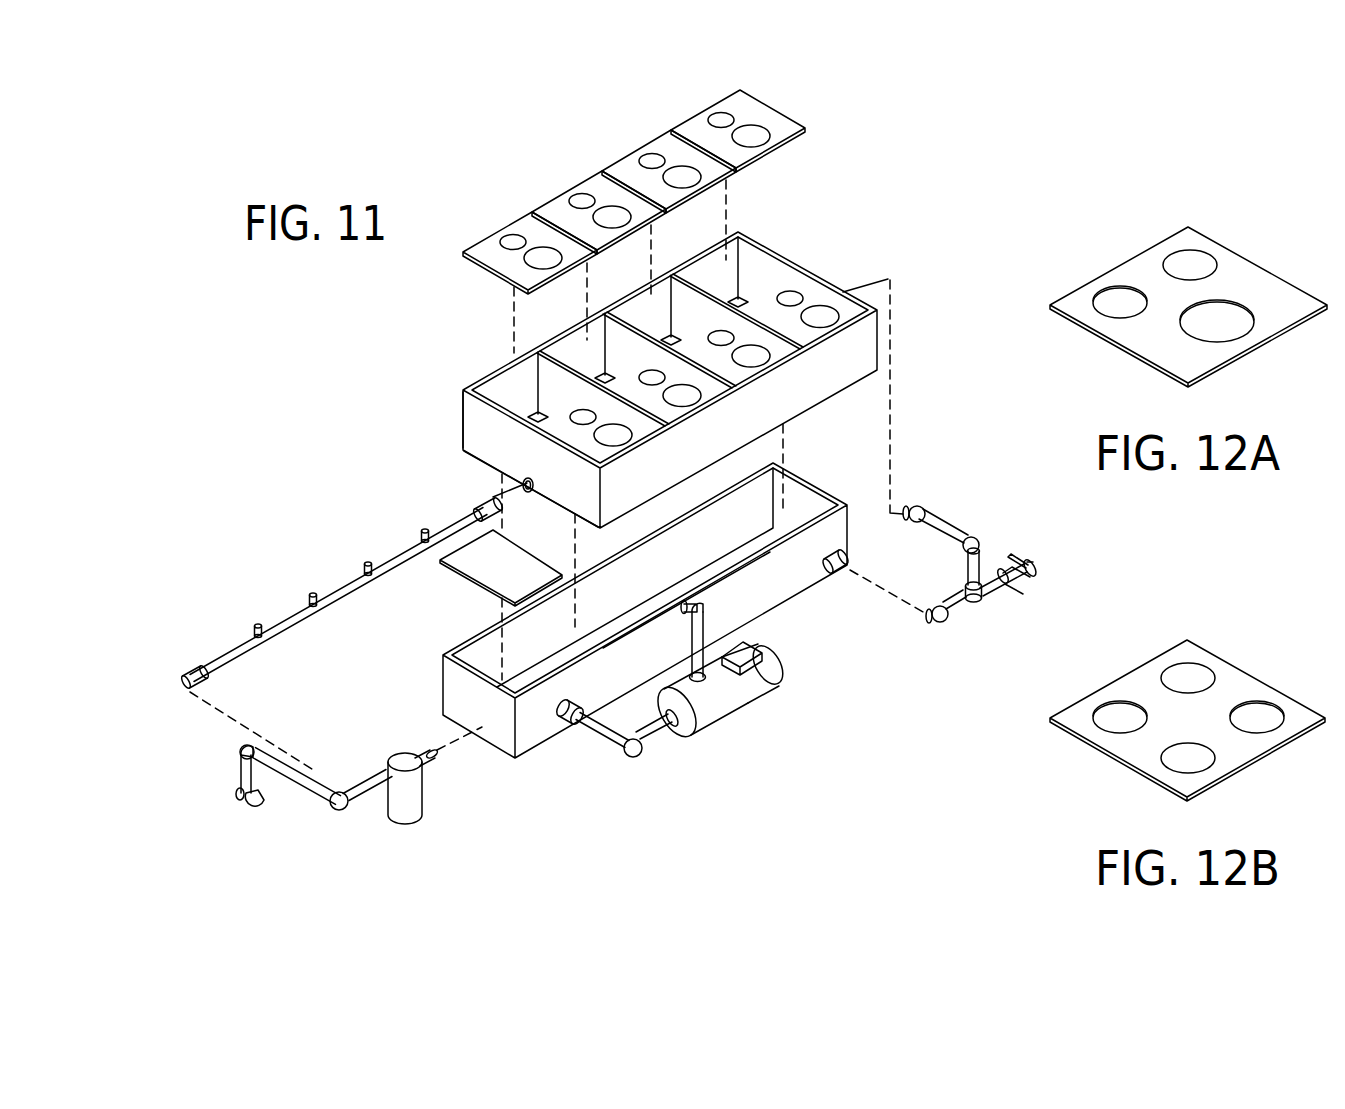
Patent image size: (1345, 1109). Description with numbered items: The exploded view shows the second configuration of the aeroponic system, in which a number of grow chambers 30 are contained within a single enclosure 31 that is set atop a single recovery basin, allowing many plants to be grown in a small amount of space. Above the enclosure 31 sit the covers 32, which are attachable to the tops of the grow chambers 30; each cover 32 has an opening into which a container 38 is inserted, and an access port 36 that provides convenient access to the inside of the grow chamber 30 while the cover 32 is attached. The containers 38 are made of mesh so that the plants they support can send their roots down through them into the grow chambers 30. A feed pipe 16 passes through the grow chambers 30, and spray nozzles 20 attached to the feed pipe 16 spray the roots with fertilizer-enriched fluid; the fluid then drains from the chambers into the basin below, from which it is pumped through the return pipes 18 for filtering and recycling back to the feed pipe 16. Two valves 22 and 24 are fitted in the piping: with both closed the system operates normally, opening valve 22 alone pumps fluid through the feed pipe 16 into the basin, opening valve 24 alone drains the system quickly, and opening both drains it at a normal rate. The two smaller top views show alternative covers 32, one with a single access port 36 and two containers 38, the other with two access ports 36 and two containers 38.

In FIG. 11, the feed pipe 16 is at (337, 595).
In FIG. 11, the return pipe 18 is at (600, 735).
In FIG. 11, the spray nozzle 20 is at (258, 635).
In FIG. 11, the valve 22 is at (970, 585).
In FIG. 11, the valve 24 is at (1020, 557).
In FIG. 11, the grow chamber 30 is at (763, 262).
In FIG. 11, the enclosure 31 is at (470, 425).
In FIG. 11, the cover 32 is at (783, 123).
In FIG. 12A, the cover 32 is at (1185, 238).
In FIG. 12B, the cover 32 is at (1183, 650).
In FIG. 12A, the access port 36 is at (1240, 320).
In FIG. 12B, the access port 36 is at (1270, 718).
In FIG. 12A, the container 38 is at (1113, 305).
In FIG. 12B, the container 38 is at (1103, 715).